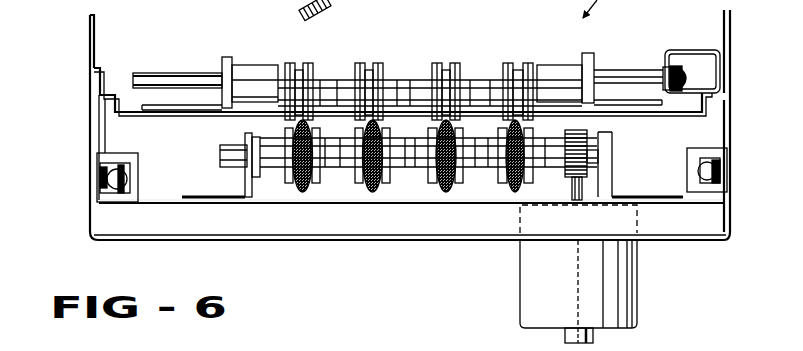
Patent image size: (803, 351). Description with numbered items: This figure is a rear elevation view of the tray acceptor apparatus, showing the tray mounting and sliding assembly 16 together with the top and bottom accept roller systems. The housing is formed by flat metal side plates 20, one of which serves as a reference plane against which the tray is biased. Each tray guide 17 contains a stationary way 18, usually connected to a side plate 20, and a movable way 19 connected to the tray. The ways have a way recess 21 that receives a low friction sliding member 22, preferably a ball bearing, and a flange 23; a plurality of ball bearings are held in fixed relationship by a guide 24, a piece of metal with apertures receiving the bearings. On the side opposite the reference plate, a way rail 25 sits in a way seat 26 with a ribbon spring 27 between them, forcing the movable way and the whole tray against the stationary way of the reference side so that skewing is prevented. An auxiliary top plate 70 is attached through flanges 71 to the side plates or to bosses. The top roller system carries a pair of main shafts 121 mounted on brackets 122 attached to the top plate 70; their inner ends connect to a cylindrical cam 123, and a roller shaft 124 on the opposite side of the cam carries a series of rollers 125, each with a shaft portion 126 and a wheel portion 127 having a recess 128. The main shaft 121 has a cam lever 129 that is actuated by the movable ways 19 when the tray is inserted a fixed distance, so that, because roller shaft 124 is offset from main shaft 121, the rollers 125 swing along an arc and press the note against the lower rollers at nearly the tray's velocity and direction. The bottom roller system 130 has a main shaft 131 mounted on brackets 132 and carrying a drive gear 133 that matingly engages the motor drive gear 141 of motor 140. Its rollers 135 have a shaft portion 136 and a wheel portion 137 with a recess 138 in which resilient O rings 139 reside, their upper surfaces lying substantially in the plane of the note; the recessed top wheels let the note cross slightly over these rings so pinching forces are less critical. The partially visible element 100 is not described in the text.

The tray mounting and sliding assembly 16 is at (720, 214).
The tray guide 17 is at (730, 155).
The stationary way 18 is at (718, 187).
The movable way 19 is at (690, 158).
The side plate 20 is at (88, 67).
The way recess 21 is at (717, 175).
The low friction sliding member 22 is at (697, 172).
The flange 23 is at (118, 155).
The guide 24 is at (119, 182).
The way rail 25 is at (100, 167).
The way seat 26 is at (105, 187).
The ribbon spring 27 is at (99, 178).
The top plate 70 is at (171, 120).
The flange 71 is at (119, 40).
The drive element 100 is at (290, 10).
The main shaft 121 is at (189, 73).
The bracket 122 is at (200, 107).
The cam 123 is at (249, 77).
The roller shaft 124 is at (281, 80).
The rollers 125 is at (478, 61).
The shaft portion 126 is at (327, 82).
The wheel portion 127 is at (521, 62).
The recess 128 is at (505, 63).
The cam lever 129 is at (712, 48).
The bottom roller system 130 is at (289, 219).
The main shaft 131 is at (222, 158).
The bracket 132 is at (203, 198).
The drive gear 133 is at (590, 137).
The rollers 135 is at (291, 189).
The shaft portion 136 is at (327, 168).
The wheel portion 137 is at (505, 184).
The recess 138 is at (510, 127).
The O rings 139 is at (433, 185).
The motor 140 is at (617, 285).
The motor drive gear 141 is at (572, 188).